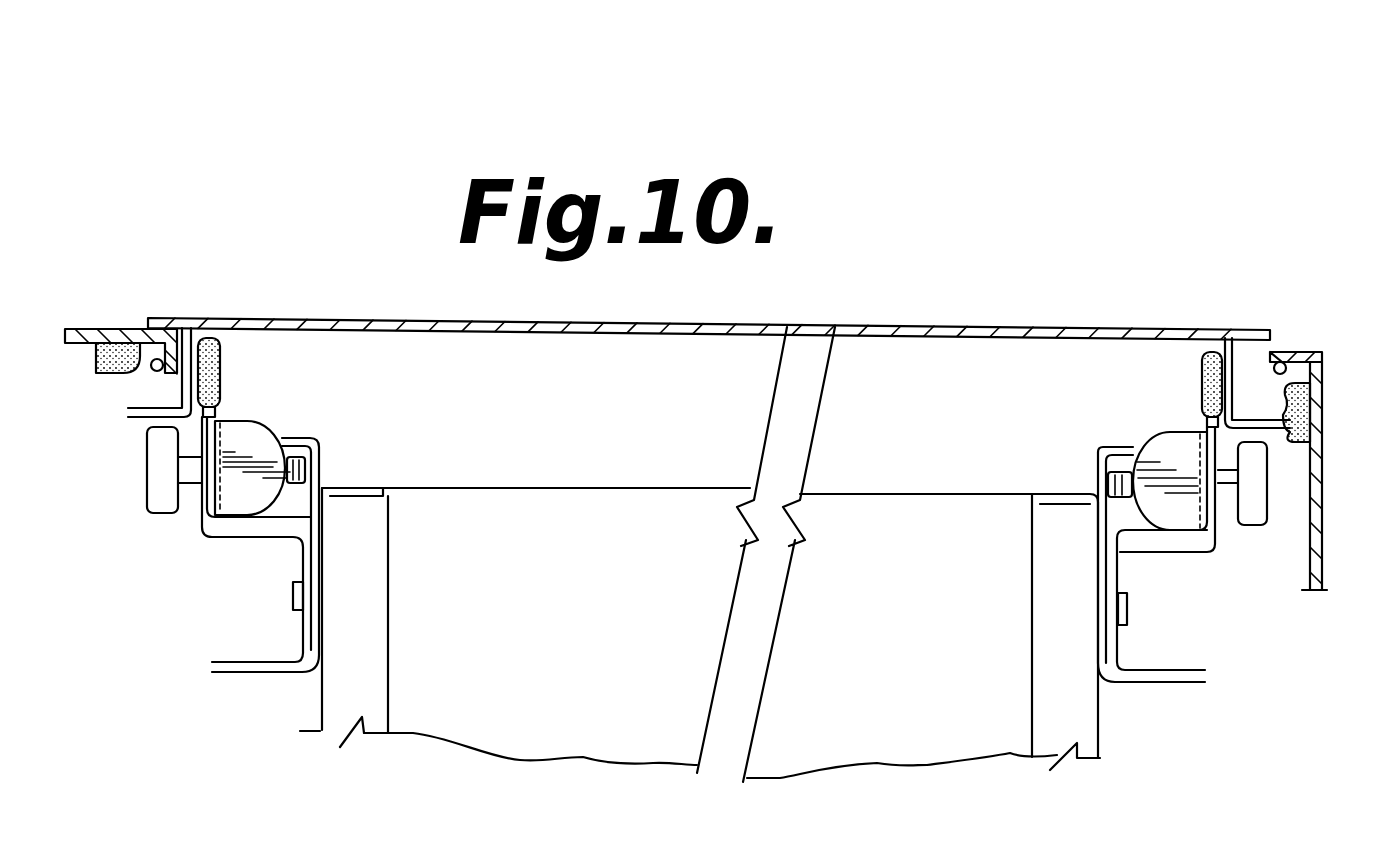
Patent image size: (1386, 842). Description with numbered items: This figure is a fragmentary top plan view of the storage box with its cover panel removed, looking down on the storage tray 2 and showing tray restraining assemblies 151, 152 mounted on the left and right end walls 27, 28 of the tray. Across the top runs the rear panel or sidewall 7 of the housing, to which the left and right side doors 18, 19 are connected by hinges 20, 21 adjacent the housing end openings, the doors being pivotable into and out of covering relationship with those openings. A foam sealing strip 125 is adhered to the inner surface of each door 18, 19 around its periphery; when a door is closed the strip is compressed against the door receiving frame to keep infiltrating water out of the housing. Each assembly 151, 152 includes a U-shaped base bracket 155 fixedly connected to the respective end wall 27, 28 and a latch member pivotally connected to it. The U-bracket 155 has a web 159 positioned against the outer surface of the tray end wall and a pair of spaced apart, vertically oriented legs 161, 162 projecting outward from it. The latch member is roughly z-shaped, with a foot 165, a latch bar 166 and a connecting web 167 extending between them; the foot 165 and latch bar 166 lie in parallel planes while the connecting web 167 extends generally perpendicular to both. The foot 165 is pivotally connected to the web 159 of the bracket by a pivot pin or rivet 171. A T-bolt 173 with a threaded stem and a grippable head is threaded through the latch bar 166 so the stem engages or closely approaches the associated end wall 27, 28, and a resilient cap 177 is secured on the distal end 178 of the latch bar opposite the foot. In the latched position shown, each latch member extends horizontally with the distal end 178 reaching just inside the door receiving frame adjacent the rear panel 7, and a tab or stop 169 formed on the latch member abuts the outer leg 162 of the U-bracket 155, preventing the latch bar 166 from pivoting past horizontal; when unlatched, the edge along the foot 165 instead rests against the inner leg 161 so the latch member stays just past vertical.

The storage tray 2 is at (518, 758).
The rear panel or sidewall 7 is at (1023, 333).
The left side door 18 is at (92, 330).
The right side door 19 is at (1322, 468).
The hinge 20 is at (153, 370).
The hinge 21 is at (1283, 368).
The left end wall 27 is at (318, 714).
The right end wall 28 is at (1078, 745).
The foam sealing strip 125 is at (110, 352).
The tray restraining assembly 151 is at (669, 473).
The tray restraining assembly 152 is at (1124, 510).
The U-shaped base bracket 155 is at (322, 440).
The web 159 is at (1097, 527).
The inner leg 161 is at (1177, 683).
The outer leg 162 is at (1120, 447).
The foot 165 is at (307, 637).
The latch bar 166 is at (217, 412).
The connecting web 167 is at (242, 540).
The tab or stop 169 is at (1173, 437).
The pivot pin 171 is at (295, 598).
The T-bolt 173 is at (150, 477).
The resilient cap 177 is at (1197, 368).
The distal end 178 is at (207, 340).